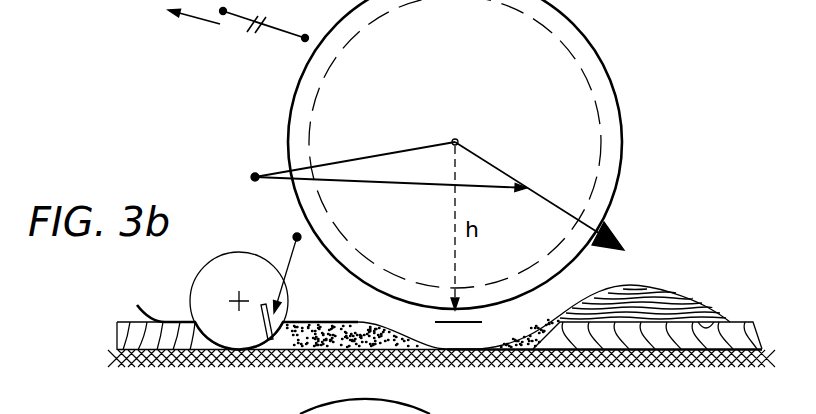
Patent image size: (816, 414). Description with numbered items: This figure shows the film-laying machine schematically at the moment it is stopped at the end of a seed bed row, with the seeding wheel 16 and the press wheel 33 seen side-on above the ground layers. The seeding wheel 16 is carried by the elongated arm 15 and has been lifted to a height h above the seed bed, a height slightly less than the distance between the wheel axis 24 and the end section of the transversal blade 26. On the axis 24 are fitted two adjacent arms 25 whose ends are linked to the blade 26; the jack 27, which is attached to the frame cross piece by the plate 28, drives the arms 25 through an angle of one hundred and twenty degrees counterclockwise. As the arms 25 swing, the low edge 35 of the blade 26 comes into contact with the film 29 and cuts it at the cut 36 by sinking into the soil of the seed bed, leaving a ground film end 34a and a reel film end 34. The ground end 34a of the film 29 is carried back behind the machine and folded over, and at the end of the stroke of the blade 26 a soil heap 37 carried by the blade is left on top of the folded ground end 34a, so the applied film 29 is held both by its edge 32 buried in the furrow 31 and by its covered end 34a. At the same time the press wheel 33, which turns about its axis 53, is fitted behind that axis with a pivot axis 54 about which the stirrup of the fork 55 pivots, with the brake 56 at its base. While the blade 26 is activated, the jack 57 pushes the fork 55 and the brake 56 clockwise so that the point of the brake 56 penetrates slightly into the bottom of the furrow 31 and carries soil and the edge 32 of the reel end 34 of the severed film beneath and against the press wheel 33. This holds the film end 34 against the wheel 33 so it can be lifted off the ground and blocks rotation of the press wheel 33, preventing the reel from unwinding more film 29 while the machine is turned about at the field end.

The elongated arm 15 is at (396, 152).
The seeding wheel 16 is at (575, 22).
The axis 24 is at (458, 136).
The arm 25 is at (546, 197).
The transversal blade 26 is at (614, 230).
The jack 27 is at (430, 186).
The plate 28 is at (254, 173).
The film 29 is at (160, 320).
The furrow 31 is at (560, 360).
The film edge 32 is at (217, 362).
The press wheel 33 is at (207, 262).
The reel film end 34 is at (233, 352).
The ground film end 34a is at (622, 348).
The low edge 35 is at (622, 250).
The cut 36 is at (317, 320).
The soil heap 37 is at (665, 285).
The axis 53 is at (238, 297).
The axis 54 is at (265, 305).
The fork 55 is at (265, 328).
The brake 56 is at (247, 362).
The jack 57 is at (292, 258).